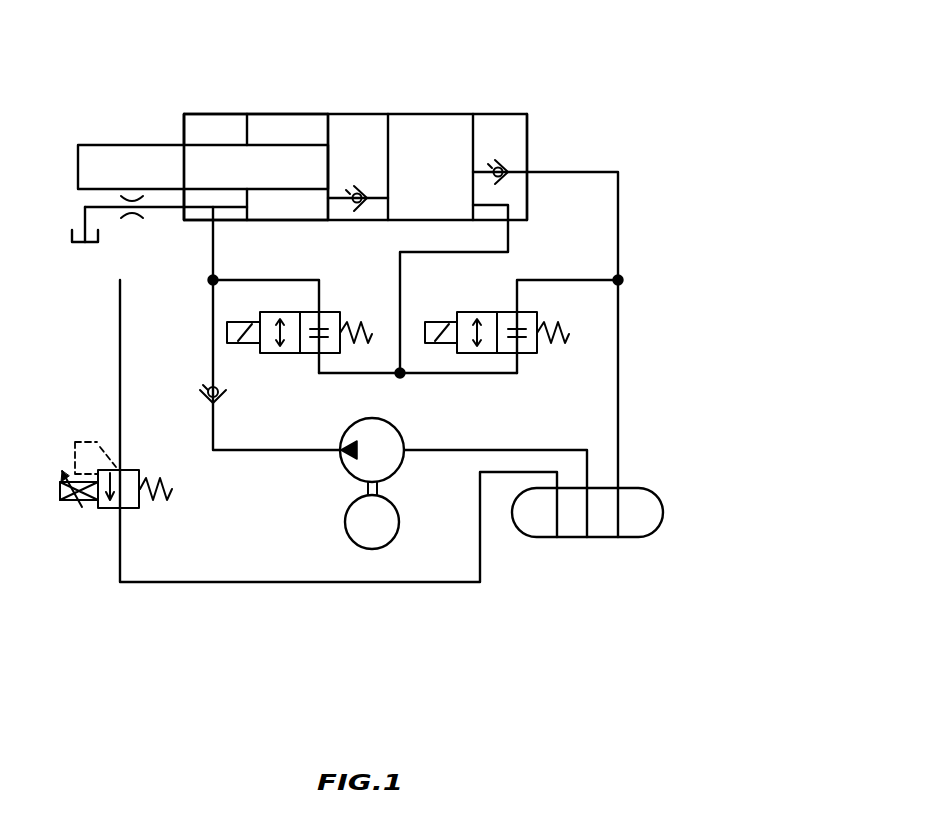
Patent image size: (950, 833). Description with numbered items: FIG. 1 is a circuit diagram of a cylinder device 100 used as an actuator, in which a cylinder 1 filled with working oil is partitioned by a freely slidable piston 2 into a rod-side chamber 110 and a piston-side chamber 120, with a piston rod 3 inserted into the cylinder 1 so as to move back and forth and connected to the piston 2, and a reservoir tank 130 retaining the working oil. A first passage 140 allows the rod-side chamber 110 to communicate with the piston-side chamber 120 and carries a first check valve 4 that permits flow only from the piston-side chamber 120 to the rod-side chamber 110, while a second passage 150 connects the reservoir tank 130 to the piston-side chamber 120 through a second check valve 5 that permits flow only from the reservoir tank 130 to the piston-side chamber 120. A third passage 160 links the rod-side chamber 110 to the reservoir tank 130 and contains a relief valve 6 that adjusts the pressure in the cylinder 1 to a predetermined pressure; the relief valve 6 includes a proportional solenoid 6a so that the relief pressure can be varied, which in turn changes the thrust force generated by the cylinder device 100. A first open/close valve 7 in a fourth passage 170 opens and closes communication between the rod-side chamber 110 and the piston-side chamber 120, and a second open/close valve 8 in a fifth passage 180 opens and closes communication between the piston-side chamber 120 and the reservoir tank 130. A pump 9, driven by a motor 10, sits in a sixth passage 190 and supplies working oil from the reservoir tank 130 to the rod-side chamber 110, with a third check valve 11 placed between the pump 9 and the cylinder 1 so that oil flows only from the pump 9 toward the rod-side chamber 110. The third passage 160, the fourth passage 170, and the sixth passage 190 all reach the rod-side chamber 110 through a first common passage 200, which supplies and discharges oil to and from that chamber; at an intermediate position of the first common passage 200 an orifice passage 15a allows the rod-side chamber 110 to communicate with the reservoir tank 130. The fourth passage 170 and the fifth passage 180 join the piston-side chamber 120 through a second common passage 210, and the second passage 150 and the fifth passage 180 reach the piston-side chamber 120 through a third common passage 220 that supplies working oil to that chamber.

The cylinder 1 is at (273, 112).
The piston 2 is at (393, 130).
The piston rod 3 is at (155, 140).
The first check valve 4 is at (356, 190).
The second check valve 5 is at (504, 165).
The relief valve 6 is at (100, 512).
The proportional solenoid 6a is at (60, 500).
The first open/close valve 7 is at (284, 355).
The second open/close valve 8 is at (537, 356).
The pump 9 is at (342, 463).
The motor 10 is at (348, 527).
The third check valve 11 is at (205, 398).
The orifice passage 15a is at (135, 218).
The cylinder device 100 is at (614, 66).
The rod-side chamber 110 is at (314, 130).
The piston-side chamber 120 is at (436, 128).
The reservoir tank 130 is at (70, 247).
The first passage 140 is at (347, 205).
The second passage 150 is at (620, 345).
The third passage 160 is at (222, 585).
The fourth passage 170 is at (321, 298).
The fifth passage 180 is at (552, 276).
The sixth passage 190 is at (244, 458).
The first common passage 200 is at (216, 249).
The second common passage 210 is at (403, 284).
The third common passage 220 is at (620, 205).